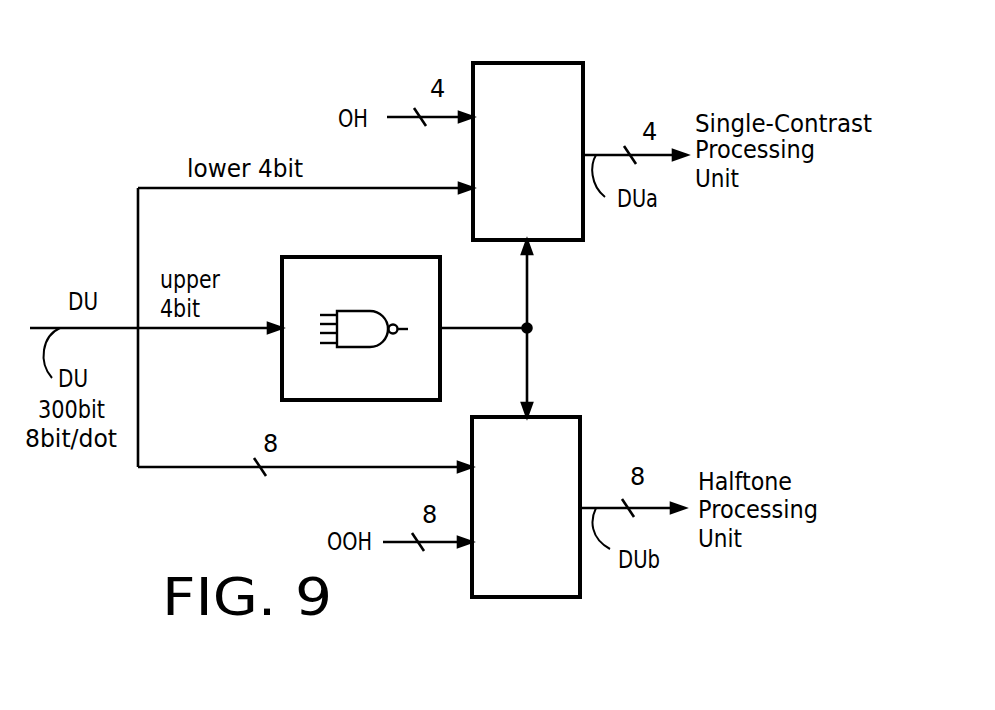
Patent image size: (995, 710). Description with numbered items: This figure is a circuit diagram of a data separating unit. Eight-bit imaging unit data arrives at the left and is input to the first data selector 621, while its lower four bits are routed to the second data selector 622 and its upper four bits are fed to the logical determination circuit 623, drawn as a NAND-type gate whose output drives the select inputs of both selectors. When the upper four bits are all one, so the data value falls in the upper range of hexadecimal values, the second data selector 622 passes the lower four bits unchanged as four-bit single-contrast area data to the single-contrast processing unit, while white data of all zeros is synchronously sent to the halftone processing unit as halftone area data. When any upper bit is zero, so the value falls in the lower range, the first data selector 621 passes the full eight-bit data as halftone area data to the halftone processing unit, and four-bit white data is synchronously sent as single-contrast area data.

The first data selector 621 is at (580, 430).
The second data selector 622 is at (583, 88).
The logical determination circuit 623 is at (327, 257).